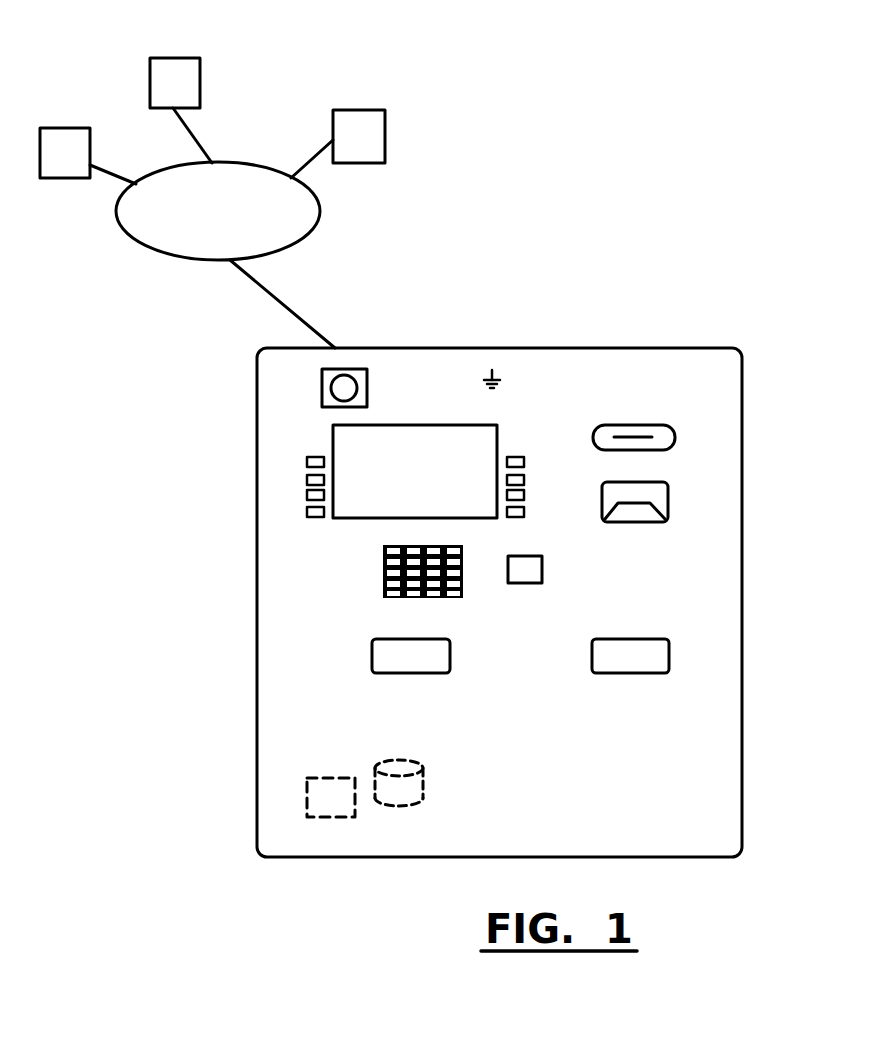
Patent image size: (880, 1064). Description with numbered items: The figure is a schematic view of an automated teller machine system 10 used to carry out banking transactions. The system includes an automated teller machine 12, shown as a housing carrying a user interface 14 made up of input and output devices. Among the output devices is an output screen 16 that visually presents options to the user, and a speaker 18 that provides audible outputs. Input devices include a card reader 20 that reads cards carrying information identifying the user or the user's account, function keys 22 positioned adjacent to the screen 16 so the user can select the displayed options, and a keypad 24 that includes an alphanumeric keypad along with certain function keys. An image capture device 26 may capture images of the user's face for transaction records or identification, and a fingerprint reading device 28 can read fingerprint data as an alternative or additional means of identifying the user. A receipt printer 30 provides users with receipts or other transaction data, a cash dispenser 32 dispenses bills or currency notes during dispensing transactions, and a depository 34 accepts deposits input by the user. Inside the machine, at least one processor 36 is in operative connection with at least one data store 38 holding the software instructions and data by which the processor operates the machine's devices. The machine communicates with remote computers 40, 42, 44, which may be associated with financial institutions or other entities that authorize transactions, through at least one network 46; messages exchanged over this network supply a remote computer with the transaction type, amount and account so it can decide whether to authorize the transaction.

The automated teller machine system 10 is at (505, 268).
The automated teller machine 12 is at (635, 348).
The user interface 14 is at (697, 475).
The output screen 16 is at (440, 483).
The speaker 18 is at (492, 378).
The card reader 20 is at (636, 522).
The function keys 22 is at (307, 478).
The keypad 24 is at (383, 580).
The image capture device 26 is at (352, 369).
The fingerprint reading device 28 is at (530, 583).
The receipt printer 30 is at (618, 432).
The cash dispenser 32 is at (627, 673).
The depository 34 is at (410, 673).
The processor 36 is at (327, 817).
The data store 38 is at (423, 780).
The remote computer 40 is at (62, 128).
The remote computer 42 is at (200, 78).
The remote computer 44 is at (385, 120).
The network 46 is at (320, 218).